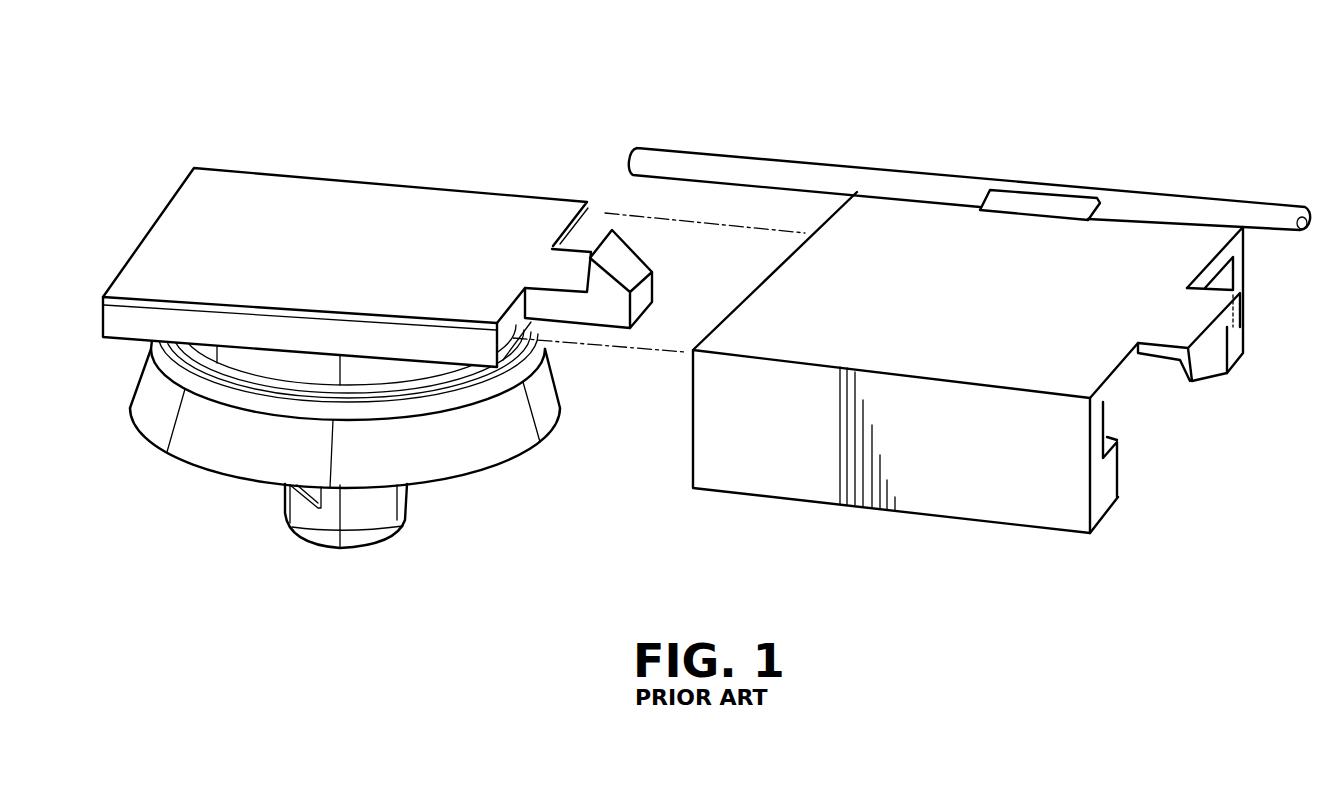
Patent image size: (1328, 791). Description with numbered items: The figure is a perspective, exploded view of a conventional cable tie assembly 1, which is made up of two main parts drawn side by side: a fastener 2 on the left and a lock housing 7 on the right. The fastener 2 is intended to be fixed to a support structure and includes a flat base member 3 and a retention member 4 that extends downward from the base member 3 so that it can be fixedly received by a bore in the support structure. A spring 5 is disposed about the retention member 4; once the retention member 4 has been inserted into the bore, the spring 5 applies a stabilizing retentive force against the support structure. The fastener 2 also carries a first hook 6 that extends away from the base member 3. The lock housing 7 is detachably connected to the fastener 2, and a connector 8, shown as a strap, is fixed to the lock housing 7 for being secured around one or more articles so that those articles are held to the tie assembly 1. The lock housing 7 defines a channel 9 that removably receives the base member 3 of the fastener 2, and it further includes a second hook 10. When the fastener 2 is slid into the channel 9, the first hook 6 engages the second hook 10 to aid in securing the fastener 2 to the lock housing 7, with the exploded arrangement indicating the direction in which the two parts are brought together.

The cable tie assembly 1 is at (588, 106).
The fastener 2 is at (355, 174).
The base member 3 is at (163, 247).
The retention member 4 is at (388, 505).
The spring 5 is at (517, 438).
The first hook 6 is at (631, 260).
The lock housing 7 is at (937, 212).
The connector 8 is at (773, 170).
The channel 9 is at (1110, 408).
The second hook 10 is at (1200, 350).